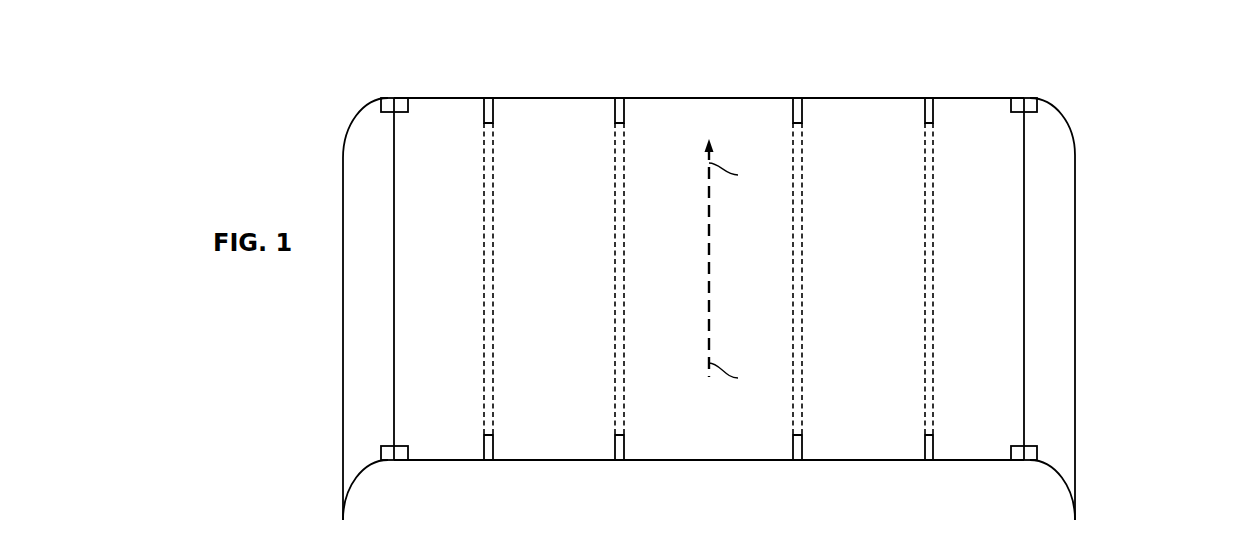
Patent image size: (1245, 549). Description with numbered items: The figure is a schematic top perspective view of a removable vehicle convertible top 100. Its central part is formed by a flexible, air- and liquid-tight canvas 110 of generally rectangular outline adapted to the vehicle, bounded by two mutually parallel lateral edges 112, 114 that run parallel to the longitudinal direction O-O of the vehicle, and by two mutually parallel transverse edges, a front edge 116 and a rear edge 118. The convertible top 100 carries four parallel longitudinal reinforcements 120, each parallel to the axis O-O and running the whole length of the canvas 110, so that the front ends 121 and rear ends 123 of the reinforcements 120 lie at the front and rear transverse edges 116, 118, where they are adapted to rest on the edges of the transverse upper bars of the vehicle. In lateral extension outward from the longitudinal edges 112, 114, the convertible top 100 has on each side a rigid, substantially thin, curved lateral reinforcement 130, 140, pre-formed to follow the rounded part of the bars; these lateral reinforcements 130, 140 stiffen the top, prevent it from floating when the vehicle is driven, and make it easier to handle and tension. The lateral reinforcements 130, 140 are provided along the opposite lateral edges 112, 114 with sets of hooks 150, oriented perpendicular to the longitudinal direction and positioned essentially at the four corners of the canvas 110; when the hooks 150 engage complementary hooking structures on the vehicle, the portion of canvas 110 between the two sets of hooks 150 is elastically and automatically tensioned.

The removable convertible top 100 is at (1125, 143).
The flexible canvas 110 is at (983, 232).
The lateral edge 112 is at (394, 315).
The lateral edge 114 is at (1023, 316).
The front transverse edge 116 is at (708, 97).
The rear transverse edge 118 is at (712, 461).
The longitudinal reinforcement 120 is at (493, 291).
The front end of longitudinal reinforcement 121 is at (488, 92).
The rear end of longitudinal reinforcement 123 is at (620, 468).
The rigid curved lateral reinforcement 130 is at (361, 290).
The rigid curved lateral reinforcement 140 is at (1058, 290).
The hook 150 is at (400, 104).